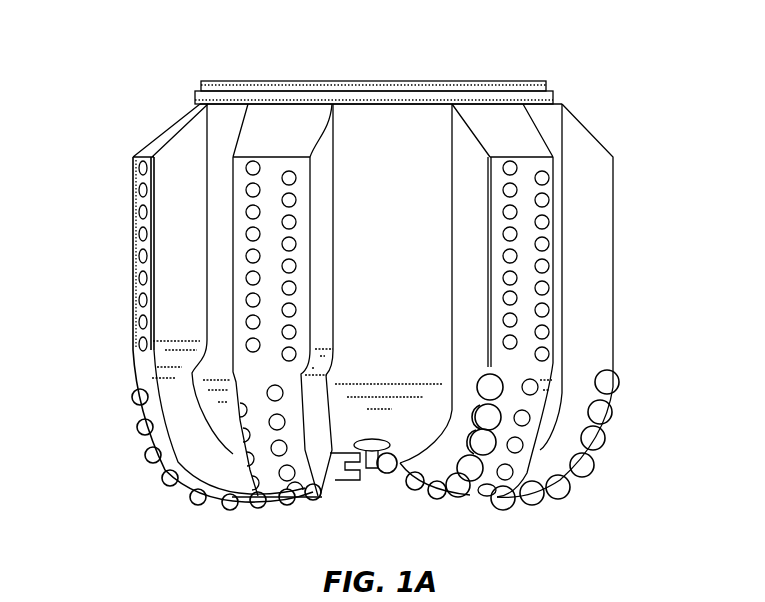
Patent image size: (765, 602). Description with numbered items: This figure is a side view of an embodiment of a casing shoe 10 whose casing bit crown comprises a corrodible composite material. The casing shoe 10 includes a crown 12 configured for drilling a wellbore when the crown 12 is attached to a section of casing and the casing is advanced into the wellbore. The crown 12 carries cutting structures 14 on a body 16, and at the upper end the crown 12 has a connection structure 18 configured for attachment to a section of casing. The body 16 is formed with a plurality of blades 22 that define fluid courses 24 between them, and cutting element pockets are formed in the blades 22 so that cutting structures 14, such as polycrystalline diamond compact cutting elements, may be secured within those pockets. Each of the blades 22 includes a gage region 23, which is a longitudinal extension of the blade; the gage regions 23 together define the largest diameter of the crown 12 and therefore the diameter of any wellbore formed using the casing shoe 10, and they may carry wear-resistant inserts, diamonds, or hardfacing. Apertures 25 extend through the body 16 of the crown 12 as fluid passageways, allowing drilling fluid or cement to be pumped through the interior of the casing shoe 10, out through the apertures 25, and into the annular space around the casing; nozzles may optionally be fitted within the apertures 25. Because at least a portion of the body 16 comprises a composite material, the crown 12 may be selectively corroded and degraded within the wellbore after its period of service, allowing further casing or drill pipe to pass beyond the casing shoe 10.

The casing shoe 10 is at (132, 56).
The crown 12 is at (150, 479).
The cutting structure 14 is at (585, 467).
The body 16 is at (357, 138).
The connection structure 18 is at (557, 81).
The blades 22 is at (275, 328).
The gage region 23 is at (133, 215).
The fluid courses 24 is at (198, 168).
The apertures 25 is at (372, 474).